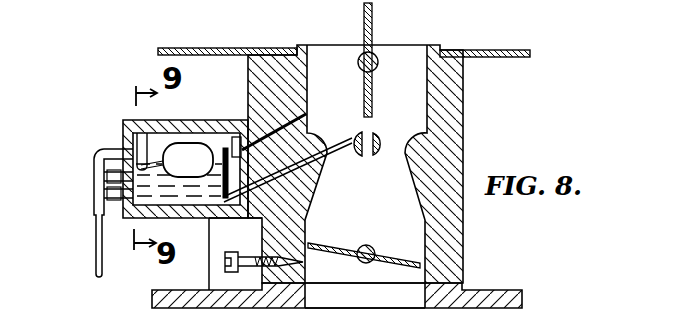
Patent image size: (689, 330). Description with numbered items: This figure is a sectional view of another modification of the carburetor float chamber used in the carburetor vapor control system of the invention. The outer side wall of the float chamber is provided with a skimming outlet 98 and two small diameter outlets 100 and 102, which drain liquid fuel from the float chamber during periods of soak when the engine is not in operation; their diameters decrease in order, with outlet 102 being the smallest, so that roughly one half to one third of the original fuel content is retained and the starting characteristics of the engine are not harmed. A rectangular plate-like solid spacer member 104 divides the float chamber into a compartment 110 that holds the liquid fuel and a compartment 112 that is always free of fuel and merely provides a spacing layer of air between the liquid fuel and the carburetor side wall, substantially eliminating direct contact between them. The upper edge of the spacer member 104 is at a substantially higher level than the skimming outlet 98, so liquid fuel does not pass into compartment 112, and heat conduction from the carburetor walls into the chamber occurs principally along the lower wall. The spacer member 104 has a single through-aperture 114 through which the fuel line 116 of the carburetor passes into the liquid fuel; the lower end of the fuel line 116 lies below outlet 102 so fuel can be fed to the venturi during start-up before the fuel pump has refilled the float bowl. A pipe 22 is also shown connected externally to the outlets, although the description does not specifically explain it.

The supply pipe 22 is at (96, 252).
The skimming outlet 98 is at (126, 148).
The small diameter outlet 100 is at (104, 176).
The small diameter outlet 102 is at (104, 194).
The spacer member 104 is at (208, 143).
The compartment 110 is at (161, 133).
The compartment 112 is at (234, 152).
The through-aperture 114 is at (213, 205).
The fuel line 116 is at (352, 142).